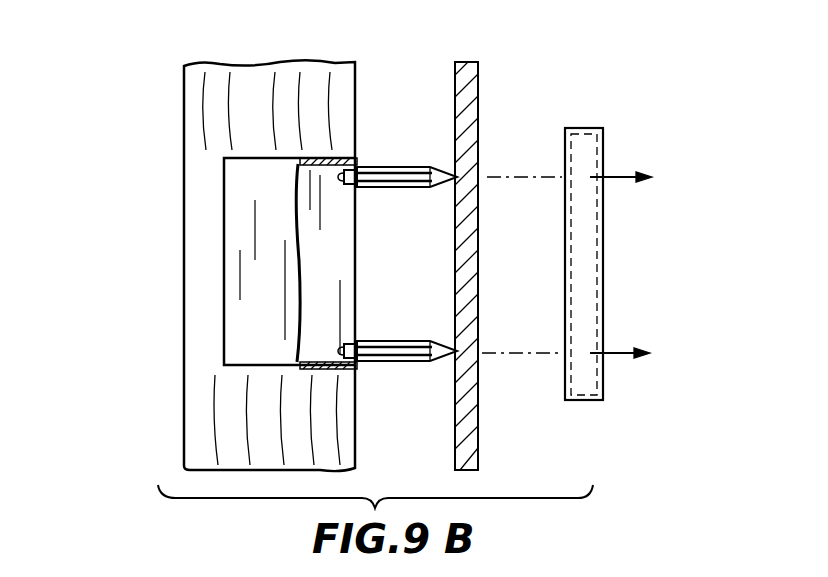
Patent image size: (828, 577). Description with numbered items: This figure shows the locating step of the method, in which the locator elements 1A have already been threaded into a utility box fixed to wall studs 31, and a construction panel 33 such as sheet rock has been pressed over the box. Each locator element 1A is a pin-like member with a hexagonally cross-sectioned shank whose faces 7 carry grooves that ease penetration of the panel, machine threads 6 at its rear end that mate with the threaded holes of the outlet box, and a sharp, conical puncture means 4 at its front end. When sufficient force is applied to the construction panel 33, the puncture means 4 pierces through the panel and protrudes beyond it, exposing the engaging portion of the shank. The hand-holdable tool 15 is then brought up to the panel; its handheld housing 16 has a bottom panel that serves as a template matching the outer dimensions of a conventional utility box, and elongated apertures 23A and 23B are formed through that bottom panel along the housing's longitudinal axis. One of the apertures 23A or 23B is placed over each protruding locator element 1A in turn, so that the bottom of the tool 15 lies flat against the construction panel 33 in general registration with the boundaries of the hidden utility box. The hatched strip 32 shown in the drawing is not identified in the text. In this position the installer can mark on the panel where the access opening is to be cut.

The wall stud 31 is at (205, 125).
The hatched insert strip 32 is at (364, 166).
The locator element 1A is at (434, 268).
The face of shank 7 is at (416, 167).
The machine threads 6 is at (349, 186).
The puncture means 4 is at (443, 184).
The construction panel 33 is at (478, 104).
The housing 16 is at (565, 243).
The hand-holdable tool 15 is at (623, 243).
The elongated aperture 23A is at (586, 374).
The elongated aperture 23B is at (598, 156).